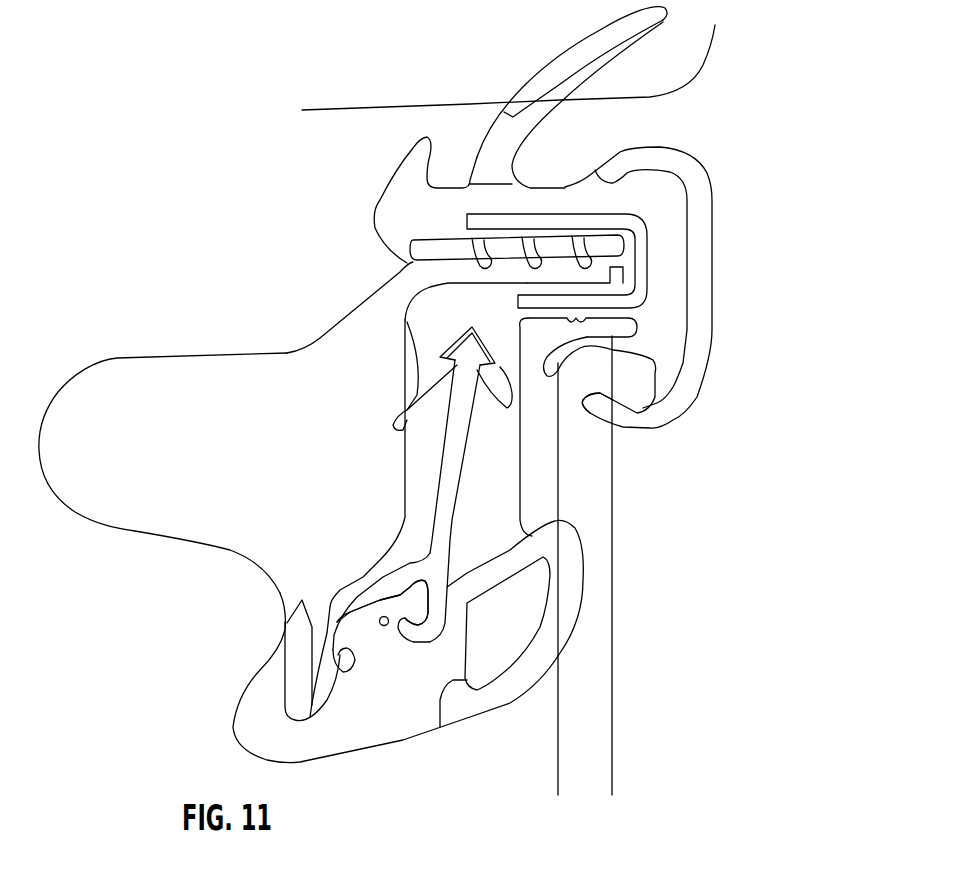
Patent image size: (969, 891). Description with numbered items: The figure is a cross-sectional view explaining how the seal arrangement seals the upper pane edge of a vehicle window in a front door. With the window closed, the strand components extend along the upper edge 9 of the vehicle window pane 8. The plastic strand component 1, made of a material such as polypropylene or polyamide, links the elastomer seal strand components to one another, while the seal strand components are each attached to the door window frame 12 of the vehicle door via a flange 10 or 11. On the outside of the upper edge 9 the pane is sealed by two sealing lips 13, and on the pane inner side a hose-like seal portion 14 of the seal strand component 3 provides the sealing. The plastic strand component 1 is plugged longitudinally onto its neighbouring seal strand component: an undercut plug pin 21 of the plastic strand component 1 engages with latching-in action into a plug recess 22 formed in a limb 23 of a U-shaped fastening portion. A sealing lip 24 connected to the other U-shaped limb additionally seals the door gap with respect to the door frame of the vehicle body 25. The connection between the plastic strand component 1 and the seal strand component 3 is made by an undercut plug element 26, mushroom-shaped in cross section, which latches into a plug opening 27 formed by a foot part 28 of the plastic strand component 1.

The plastic strand component 1 is at (469, 514).
The seal strand component 3 is at (372, 763).
The vehicle window pane 8 is at (615, 670).
The upper edge 9 is at (655, 320).
The flange 10 is at (507, 277).
The flange 11 is at (290, 690).
The door window frame 12 is at (716, 228).
The sealing lips 13 is at (603, 410).
The hose-like seal portion 14 is at (577, 600).
The undercut plug pin 21 is at (510, 408).
The plug recess 22 is at (437, 340).
The limb 23 is at (437, 320).
The sealing lip 24 is at (557, 83).
The vehicle body 25 is at (710, 62).
The undercut plug element 26 is at (352, 643).
The plug opening 27 is at (370, 590).
The foot part 28 is at (410, 547).